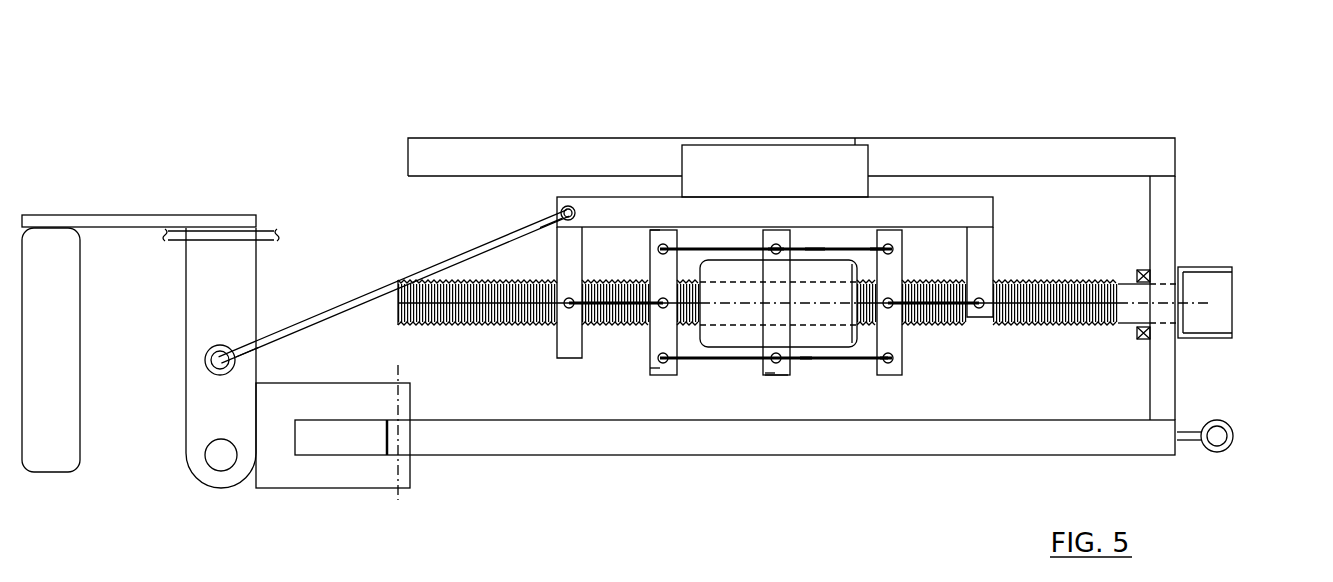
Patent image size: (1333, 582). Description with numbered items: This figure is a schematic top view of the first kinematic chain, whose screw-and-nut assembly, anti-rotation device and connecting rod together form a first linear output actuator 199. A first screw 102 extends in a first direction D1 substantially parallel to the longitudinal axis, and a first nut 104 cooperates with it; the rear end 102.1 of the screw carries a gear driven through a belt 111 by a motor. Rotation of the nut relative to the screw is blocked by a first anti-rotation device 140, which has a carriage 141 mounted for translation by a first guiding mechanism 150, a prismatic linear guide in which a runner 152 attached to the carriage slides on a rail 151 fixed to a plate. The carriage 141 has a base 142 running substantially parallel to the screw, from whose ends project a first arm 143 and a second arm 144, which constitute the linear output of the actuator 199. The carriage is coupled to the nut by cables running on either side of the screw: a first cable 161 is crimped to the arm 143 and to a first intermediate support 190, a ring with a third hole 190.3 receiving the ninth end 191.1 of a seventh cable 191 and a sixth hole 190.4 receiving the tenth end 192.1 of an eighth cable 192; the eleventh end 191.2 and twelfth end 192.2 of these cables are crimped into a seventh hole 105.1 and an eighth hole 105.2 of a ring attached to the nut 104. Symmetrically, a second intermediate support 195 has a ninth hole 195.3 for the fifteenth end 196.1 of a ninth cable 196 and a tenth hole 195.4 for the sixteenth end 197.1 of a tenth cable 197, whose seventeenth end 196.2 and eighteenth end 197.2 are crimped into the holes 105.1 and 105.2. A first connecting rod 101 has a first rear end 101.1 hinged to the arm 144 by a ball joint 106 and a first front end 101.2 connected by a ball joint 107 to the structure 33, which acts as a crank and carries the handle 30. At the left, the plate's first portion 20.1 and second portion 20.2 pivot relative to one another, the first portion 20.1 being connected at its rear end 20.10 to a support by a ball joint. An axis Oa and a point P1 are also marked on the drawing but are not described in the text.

The first linear output actuator 199 is at (312, 100).
The structure 33 is at (197, 200).
The handle 30 is at (62, 458).
The first portion 20.1 is at (1133, 447).
The second portion 20.2 is at (288, 490).
The rear end 20.10 is at (1213, 447).
The first connecting rod 101 is at (340, 305).
The first rear end 101.1 is at (565, 208).
The first front end 101.2 is at (230, 348).
The first screw 102 is at (401, 290).
The rear end 102.1 is at (1180, 338).
The first nut 104 is at (843, 323).
The seventh hole 105.1 is at (775, 376).
The eighth hole 105.2 is at (773, 250).
The ball joint 106 is at (560, 213).
The ball joint 107 is at (217, 361).
The belt 111 is at (1225, 275).
The first anti-rotation device 140 is at (897, 112).
The carriage 141 is at (588, 198).
The base 142 is at (960, 219).
The first arm 143 is at (983, 197).
The second arm 144 is at (553, 342).
The first guiding mechanism 150 is at (803, 132).
The rail 151 is at (855, 138).
The runner 152 is at (855, 160).
The first cable 161 is at (950, 312).
The first intermediate support 190 is at (898, 377).
The third hole 190.3 is at (890, 377).
The sixth hole 190.4 is at (893, 245).
The seventh cable 191 is at (805, 361).
The ninth end 191.1 is at (885, 360).
The eleventh end 191.2 is at (777, 376).
The eighth cable 192 is at (815, 248).
The tenth end 192.1 is at (878, 247).
The twelfth end 192.2 is at (775, 245).
The second intermediate support 195 is at (667, 376).
The ninth hole 195.3 is at (660, 358).
The tenth hole 195.4 is at (661, 251).
The ninth cable 196 is at (697, 361).
The fifteenth end 196.1 is at (652, 368).
The seventeenth end 196.2 is at (770, 373).
The tenth cable 197 is at (722, 247).
The sixteenth end 197.1 is at (649, 229).
The eighteenth end 197.2 is at (770, 245).
The first direction D1 is at (1195, 303).
The axis Oa is at (400, 500).
The point P1 is at (814, 567).